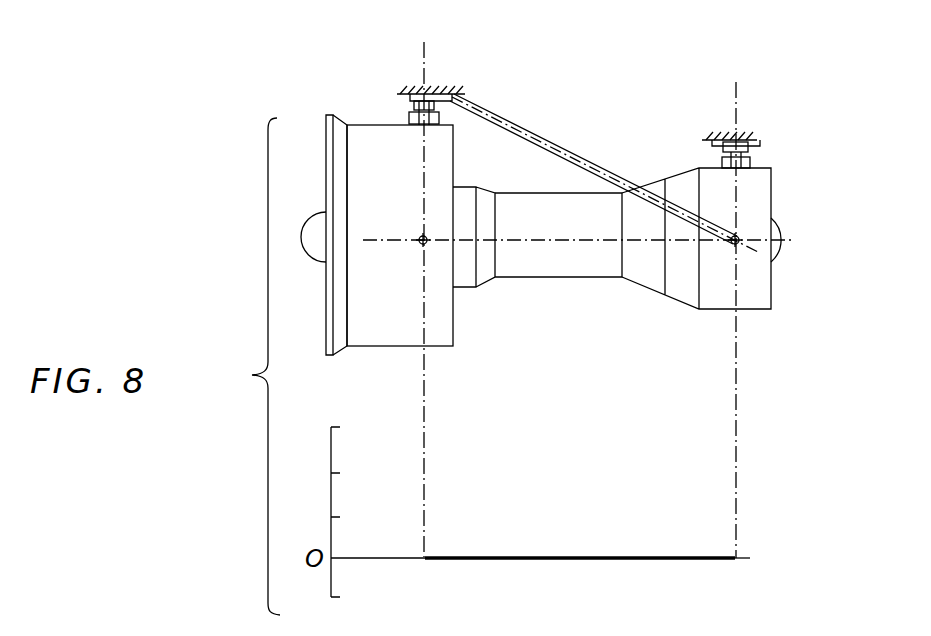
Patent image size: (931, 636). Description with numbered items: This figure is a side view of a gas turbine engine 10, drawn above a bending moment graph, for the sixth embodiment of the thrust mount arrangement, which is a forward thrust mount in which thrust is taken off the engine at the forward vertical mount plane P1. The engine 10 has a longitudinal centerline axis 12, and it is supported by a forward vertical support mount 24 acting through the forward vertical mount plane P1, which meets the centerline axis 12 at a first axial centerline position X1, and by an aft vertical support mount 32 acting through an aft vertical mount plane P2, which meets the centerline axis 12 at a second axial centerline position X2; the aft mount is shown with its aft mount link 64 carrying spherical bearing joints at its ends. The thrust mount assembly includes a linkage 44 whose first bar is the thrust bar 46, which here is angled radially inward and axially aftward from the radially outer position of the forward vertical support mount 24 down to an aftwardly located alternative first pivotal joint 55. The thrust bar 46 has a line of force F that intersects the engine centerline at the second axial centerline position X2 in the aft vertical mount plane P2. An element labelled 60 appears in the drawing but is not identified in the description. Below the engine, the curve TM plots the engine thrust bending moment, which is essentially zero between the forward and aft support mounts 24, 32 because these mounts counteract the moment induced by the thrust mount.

The gas turbine engine 10 is at (405, 348).
The longitudinal centerline axis 12 is at (775, 205).
The forward vertical support mount 24 is at (400, 113).
The aft vertical support mount 32 is at (758, 150).
The four bar linkage 44 is at (573, 229).
The thrust bar 46 is at (518, 130).
The alternative first pivotal joint 55 is at (739, 237).
The bracket 60 is at (752, 160).
The aft mount link 64 is at (745, 150).
The line of force F is at (580, 160).
The forward vertical mount plane P1 is at (426, 56).
The aft vertical mount plane P2 is at (738, 95).
The first axial centerline position X1 is at (421, 236).
The second axial centerline position X2 is at (742, 247).
The engine thrust bending moment TM is at (578, 556).